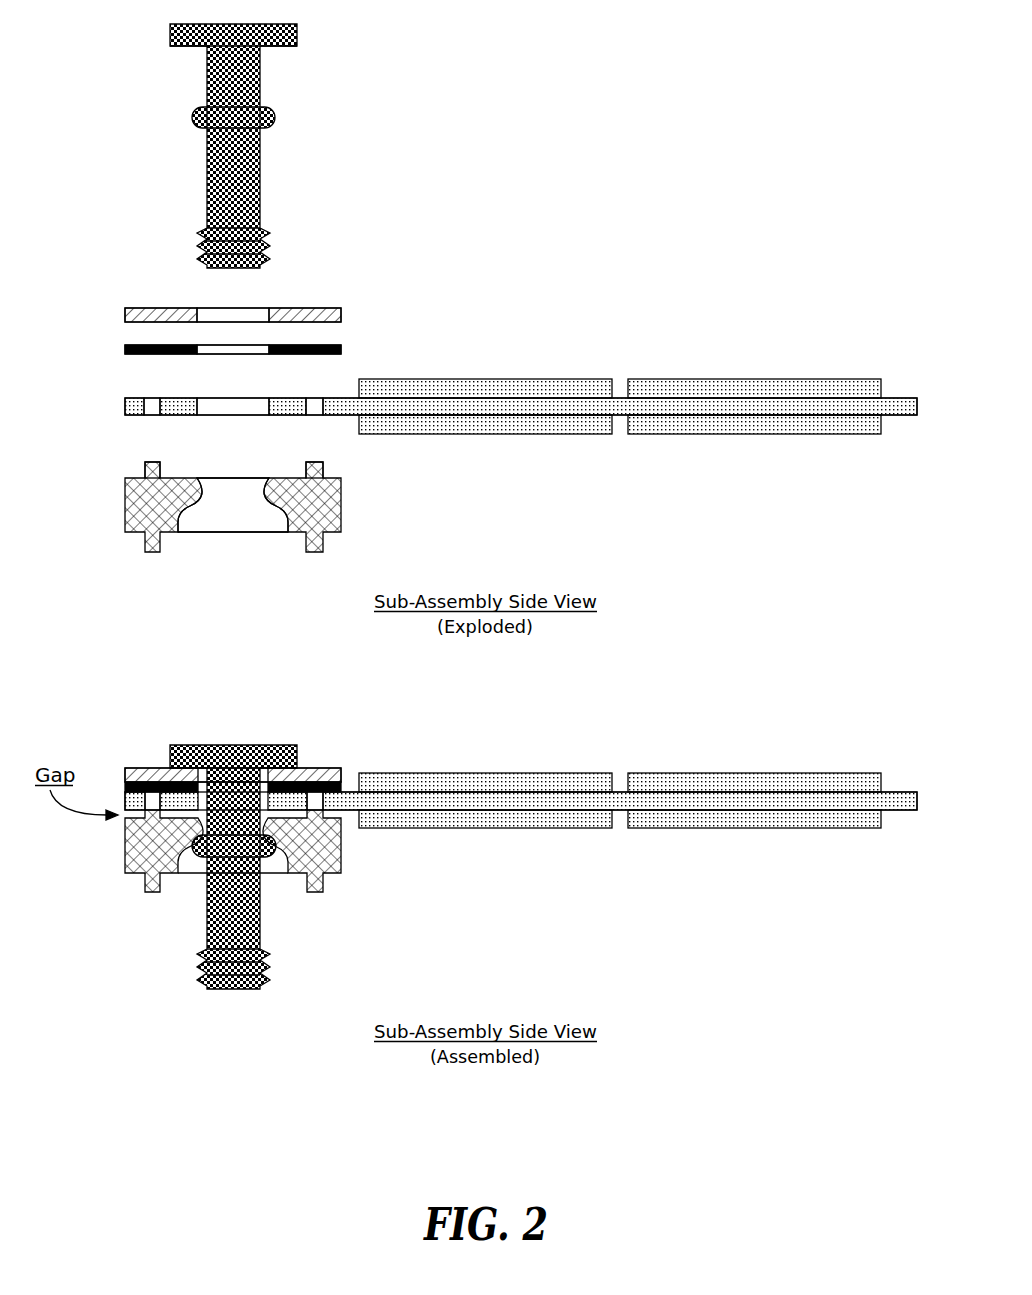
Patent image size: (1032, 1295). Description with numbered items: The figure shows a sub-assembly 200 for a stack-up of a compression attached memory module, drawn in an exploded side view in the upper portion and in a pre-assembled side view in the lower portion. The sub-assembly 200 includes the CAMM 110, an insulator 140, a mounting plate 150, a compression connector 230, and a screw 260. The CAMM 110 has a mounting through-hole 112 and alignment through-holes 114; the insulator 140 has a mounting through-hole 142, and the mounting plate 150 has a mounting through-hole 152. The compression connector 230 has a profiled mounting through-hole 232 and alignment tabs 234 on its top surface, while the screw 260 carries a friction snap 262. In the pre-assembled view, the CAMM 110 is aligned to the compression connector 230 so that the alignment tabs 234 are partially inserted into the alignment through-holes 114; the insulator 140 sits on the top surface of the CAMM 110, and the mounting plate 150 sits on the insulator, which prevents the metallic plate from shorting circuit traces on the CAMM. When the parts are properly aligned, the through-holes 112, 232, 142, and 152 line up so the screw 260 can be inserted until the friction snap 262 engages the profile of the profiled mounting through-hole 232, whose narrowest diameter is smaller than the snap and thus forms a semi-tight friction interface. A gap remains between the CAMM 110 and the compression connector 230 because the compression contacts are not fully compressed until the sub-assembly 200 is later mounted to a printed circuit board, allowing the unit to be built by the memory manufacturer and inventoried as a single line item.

The sub-assembly 200 is at (53, 626).
The compression attached memory module 110 is at (903, 397).
The mounting through-hole 112 is at (212, 398).
The alignment through-holes 114 is at (152, 398).
The insulator 140 is at (125, 349).
The mounting through-hole 142 is at (236, 355).
The mounting plate 150 is at (125, 317).
The mounting through-hole 152 is at (214, 308).
The compression connector 230 is at (125, 490).
The profiled mounting through-hole 232 is at (212, 478).
The alignment tabs 234 is at (155, 462).
The screw 260 is at (170, 36).
The friction snap 262 is at (192, 118).